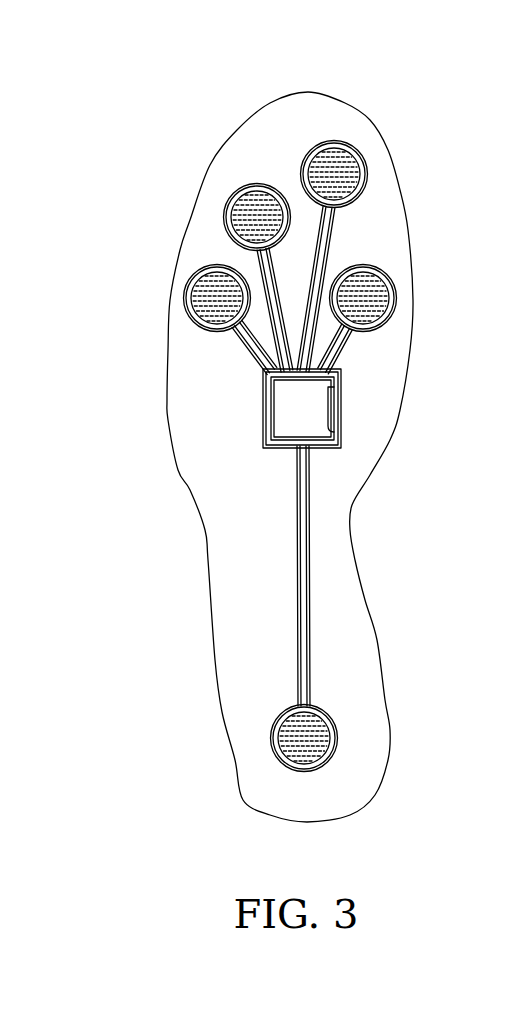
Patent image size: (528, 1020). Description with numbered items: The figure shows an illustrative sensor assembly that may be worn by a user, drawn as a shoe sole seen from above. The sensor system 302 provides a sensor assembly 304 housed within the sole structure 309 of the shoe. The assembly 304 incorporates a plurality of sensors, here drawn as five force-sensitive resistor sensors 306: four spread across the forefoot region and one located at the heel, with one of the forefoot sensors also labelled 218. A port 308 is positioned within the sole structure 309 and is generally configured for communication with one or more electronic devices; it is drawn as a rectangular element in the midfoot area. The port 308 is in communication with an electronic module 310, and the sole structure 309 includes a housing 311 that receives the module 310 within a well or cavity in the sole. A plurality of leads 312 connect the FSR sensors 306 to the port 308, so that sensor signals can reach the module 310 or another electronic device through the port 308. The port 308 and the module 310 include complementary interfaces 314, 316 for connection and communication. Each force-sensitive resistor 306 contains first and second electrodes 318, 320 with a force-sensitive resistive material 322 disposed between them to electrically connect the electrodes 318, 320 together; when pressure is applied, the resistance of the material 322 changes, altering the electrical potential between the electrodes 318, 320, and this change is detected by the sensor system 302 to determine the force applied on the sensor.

The sensor 218 is at (314, 141).
The sensor system 302 is at (274, 445).
The sensor assembly 304 is at (318, 587).
The force-sensitive resistor sensors 306 is at (284, 460).
The port 308 is at (264, 413).
The sole structure 309 is at (215, 658).
The electronic module 310 is at (308, 427).
The housing 311 is at (262, 397).
The leads 312 is at (243, 341).
The interface 314 is at (341, 402).
The interface 316 is at (335, 439).
The first electrode 318 is at (278, 753).
The second electrode 320 is at (344, 150).
The force-sensitive resistive material 322 is at (353, 175).